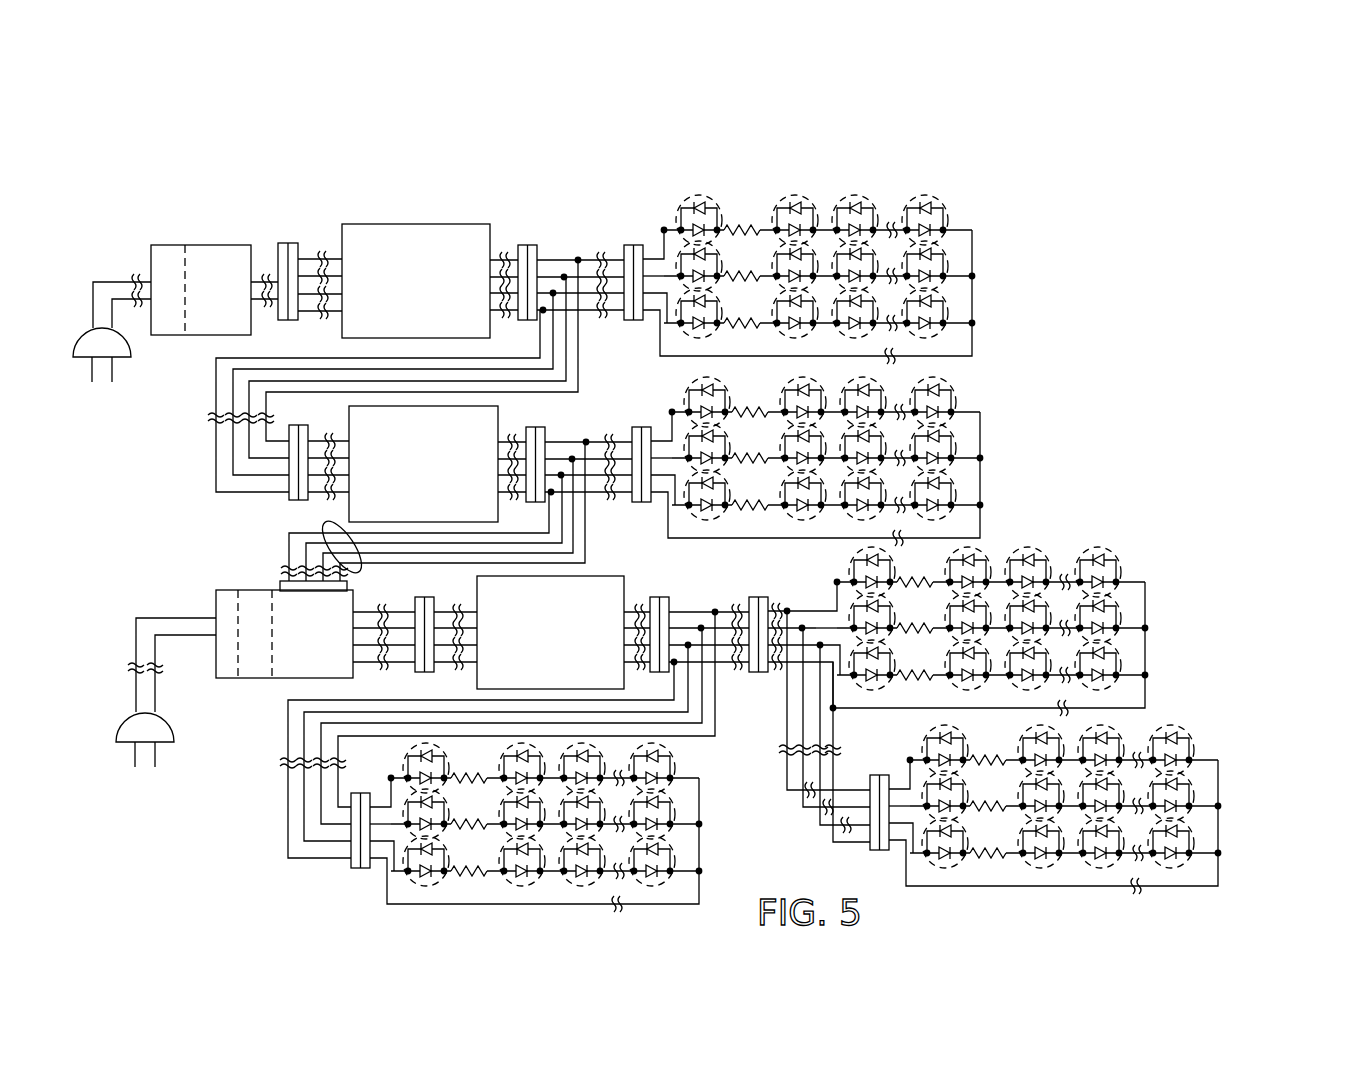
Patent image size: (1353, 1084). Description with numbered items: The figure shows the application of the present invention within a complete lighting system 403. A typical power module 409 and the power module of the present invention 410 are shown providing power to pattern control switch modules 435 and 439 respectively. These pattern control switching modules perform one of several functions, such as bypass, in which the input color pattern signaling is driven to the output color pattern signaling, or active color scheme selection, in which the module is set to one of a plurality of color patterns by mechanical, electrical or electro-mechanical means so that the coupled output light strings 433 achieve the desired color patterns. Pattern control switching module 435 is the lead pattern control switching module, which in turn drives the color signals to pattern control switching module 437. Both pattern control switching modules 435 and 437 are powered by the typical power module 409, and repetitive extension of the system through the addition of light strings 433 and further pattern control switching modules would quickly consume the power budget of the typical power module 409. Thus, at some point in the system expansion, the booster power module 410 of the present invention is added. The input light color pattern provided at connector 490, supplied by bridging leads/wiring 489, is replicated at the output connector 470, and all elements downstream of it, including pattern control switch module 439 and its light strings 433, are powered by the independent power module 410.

The lighting system 403 is at (166, 148).
The typical power module 409 is at (177, 237).
The power module of the present invention 410 is at (220, 576).
The light string 433 is at (975, 226).
The pattern control switch module 435 is at (435, 224).
The pattern control switching module 437 is at (498, 415).
The pattern control switch module 439 is at (624, 588).
The output connector 470 is at (418, 583).
The bridging leads/wiring 489 is at (323, 526).
The connector 490 is at (284, 582).